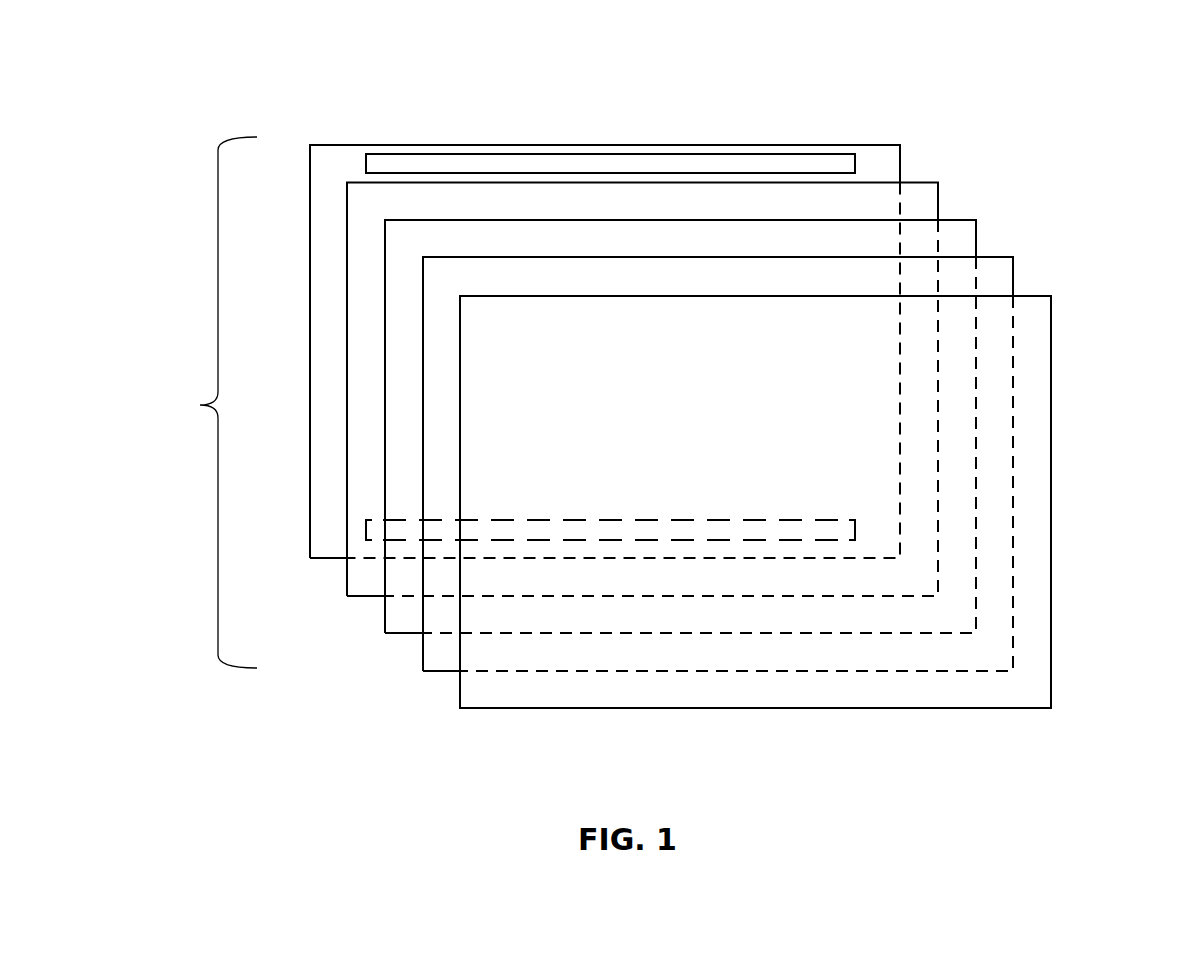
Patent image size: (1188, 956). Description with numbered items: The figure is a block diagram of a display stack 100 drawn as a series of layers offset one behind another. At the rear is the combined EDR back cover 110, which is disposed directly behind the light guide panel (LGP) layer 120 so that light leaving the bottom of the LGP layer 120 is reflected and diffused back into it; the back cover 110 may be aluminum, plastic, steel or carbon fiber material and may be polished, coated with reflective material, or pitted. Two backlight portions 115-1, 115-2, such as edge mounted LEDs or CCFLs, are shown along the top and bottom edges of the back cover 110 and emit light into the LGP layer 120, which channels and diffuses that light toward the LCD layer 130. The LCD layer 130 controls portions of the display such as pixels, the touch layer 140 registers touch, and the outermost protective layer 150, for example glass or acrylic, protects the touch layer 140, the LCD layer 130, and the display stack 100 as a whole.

The display stack 100 is at (187, 402).
The combined EDR back cover 110 is at (605, 305).
The backlight portion 115-1 is at (610, 126).
The backlight portion 115-2 is at (596, 640).
The light guide panel (LGP) layer 120 is at (703, 361).
The LCD layer 130 is at (741, 405).
The touch layer 140 is at (803, 441).
The protective layer 150 is at (817, 497).